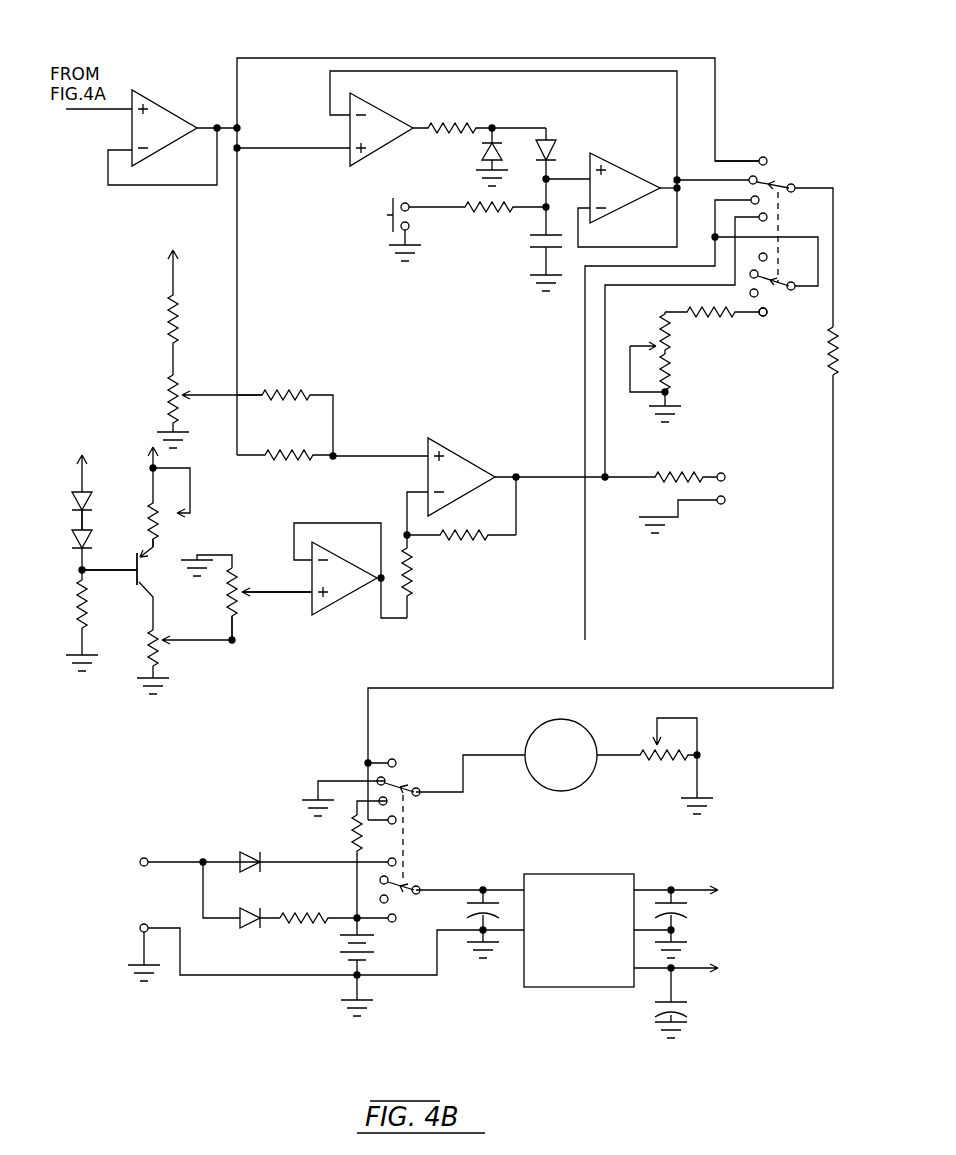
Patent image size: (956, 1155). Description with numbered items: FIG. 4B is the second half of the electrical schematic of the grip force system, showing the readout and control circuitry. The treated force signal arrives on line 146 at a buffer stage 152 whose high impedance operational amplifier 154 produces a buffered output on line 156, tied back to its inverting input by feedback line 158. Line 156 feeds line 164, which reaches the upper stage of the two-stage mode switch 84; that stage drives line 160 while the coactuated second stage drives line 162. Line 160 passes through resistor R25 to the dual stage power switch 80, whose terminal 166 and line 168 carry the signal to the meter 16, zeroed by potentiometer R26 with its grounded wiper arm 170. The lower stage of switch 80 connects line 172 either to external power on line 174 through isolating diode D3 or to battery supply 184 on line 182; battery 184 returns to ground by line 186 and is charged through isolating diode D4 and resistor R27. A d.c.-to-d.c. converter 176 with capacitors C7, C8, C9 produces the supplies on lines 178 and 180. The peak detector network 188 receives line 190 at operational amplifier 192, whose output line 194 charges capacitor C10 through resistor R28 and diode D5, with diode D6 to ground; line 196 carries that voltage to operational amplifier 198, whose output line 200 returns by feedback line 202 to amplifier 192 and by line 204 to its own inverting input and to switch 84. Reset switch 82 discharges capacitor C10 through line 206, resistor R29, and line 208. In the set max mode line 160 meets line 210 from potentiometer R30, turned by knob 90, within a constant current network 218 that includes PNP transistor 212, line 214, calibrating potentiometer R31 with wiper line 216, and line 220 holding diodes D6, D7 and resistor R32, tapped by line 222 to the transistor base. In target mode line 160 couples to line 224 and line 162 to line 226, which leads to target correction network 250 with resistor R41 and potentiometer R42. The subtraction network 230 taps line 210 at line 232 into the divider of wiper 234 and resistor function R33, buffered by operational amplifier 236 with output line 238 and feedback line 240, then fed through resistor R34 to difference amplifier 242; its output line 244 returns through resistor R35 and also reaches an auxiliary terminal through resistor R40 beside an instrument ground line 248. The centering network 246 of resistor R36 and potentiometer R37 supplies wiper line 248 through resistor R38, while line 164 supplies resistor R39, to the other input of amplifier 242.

The meter 16 is at (586, 728).
The dual stage power switch 80 is at (474, 706).
The reset switch 82 is at (380, 236).
The two-stage mode switch 84 is at (755, 218).
The knob 90 is at (159, 668).
The line 146 is at (108, 112).
The buffer stage 152 is at (175, 114).
The operational amplifier 154 is at (152, 100).
The line 156 is at (208, 125).
The feedback line 158 is at (153, 185).
The line 160 is at (812, 187).
The line 162 is at (797, 295).
The line 164 is at (425, 58).
The terminal 166 is at (373, 760).
The line 168 is at (498, 755).
The wiper arm 170 is at (700, 735).
The line 172 is at (440, 890).
The line 174 is at (326, 860).
The d.c.-to-d.c. converter 176 is at (556, 874).
The line 178 is at (656, 890).
The line 180 is at (660, 975).
The line 182 is at (386, 926).
The battery supply 184 is at (336, 948).
The line 186 is at (414, 978).
The peak detector network 188 is at (675, 160).
The line 190 is at (286, 150).
The operational amplifier 192 is at (368, 96).
The output line 194 is at (490, 126).
The line 196 is at (572, 178).
The operational amplifier 198 is at (610, 158).
The output line 200 is at (673, 180).
The feedback line 202 is at (330, 98).
The line 204 is at (613, 244).
The line 206 is at (519, 207).
The line 208 is at (382, 253).
The line 210 is at (584, 342).
The PNP transistor 212 is at (143, 554).
The line 214 is at (151, 534).
The wiper arm line 216 is at (192, 495).
The constant current network 218 is at (81, 524).
The line 220 is at (84, 553).
The line 222 is at (102, 576).
The line 224 is at (637, 287).
The line 226 is at (743, 315).
The subtraction network 230 is at (506, 460).
The line 232 is at (236, 626).
The wiper arm line 234 is at (294, 590).
The operational amplifier 236 is at (320, 614).
The line 238 is at (406, 620).
The feedback line 240 is at (333, 522).
The operational amplifier 242 is at (461, 452).
The line 244 is at (562, 476).
The centering network 246 is at (313, 379).
The wiper arm line 248 is at (710, 505).
The target correction network 250 is at (709, 376).
The capacitor C7 is at (467, 907).
The capacitor C8 is at (689, 918).
The capacitor C9 is at (689, 1008).
The capacitor C10 is at (535, 252).
The isolating diode D3 is at (248, 854).
The isolating diode D4 is at (244, 926).
The diode D5 is at (545, 138).
The diode D6 is at (480, 150).
The diode D7 is at (72, 540).
The resistor R25 is at (830, 374).
The potentiometer R26 is at (650, 758).
The resistor R27 is at (291, 910).
The resistor R28 is at (442, 125).
The resistor R29 is at (483, 212).
The potentiometer R30 is at (150, 648).
The calibrating potentiometer R31 is at (151, 505).
The resistor R32 is at (87, 623).
The resistor function R33 is at (226, 602).
The resistor R34 is at (417, 580).
The resistor R35 is at (470, 538).
The resistor R36 is at (170, 298).
The potentiometer R37 is at (172, 411).
The resistor R38 is at (299, 393).
The resistor R39 is at (280, 460).
The resistor R40 is at (671, 476).
The resistor R41 is at (721, 315).
The potentiometer R42 is at (672, 378).